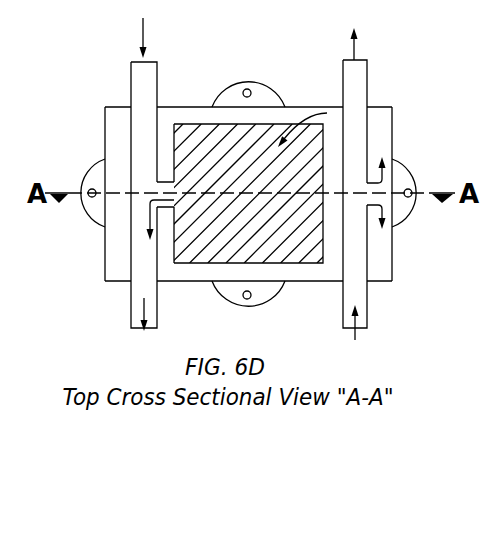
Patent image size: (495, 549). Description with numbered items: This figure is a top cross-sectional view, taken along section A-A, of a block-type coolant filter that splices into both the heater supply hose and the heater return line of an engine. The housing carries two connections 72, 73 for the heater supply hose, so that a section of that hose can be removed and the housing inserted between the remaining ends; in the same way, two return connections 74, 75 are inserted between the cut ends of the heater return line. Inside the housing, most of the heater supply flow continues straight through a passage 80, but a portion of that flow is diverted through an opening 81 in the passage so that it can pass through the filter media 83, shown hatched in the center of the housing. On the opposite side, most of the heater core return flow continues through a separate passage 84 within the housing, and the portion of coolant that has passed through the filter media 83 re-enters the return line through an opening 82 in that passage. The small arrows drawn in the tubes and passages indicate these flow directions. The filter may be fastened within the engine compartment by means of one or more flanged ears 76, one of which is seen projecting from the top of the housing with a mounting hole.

The connection 72 is at (370, 266).
The connection 73 is at (370, 110).
The return connection 74 is at (157, 105).
The return connection 75 is at (133, 263).
The flanged ear 76 is at (248, 82).
The passage 80 is at (357, 160).
The opening 81 is at (366, 193).
The opening 82 is at (178, 203).
The filter media 83 is at (250, 188).
The passage 84 is at (142, 163).